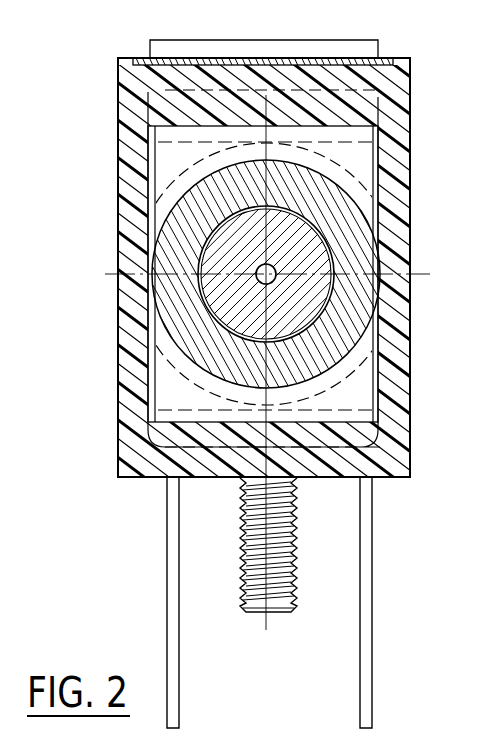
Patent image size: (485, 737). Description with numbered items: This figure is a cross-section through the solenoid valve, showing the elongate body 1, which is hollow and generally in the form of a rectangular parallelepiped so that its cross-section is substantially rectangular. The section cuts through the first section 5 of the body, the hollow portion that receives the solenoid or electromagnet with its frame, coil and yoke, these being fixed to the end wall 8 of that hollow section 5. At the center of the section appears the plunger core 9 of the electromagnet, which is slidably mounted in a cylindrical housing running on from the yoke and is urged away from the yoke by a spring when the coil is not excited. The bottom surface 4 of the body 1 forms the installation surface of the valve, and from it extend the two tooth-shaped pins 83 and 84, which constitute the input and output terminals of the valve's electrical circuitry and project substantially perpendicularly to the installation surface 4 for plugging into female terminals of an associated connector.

The elongate body 1 is at (397, 150).
The bottom surface 4 is at (316, 478).
The first section 5 is at (213, 97).
The end wall 8 is at (299, 106).
The plunger core 9 is at (343, 258).
The pin 83 is at (172, 644).
The pin 84 is at (361, 608).